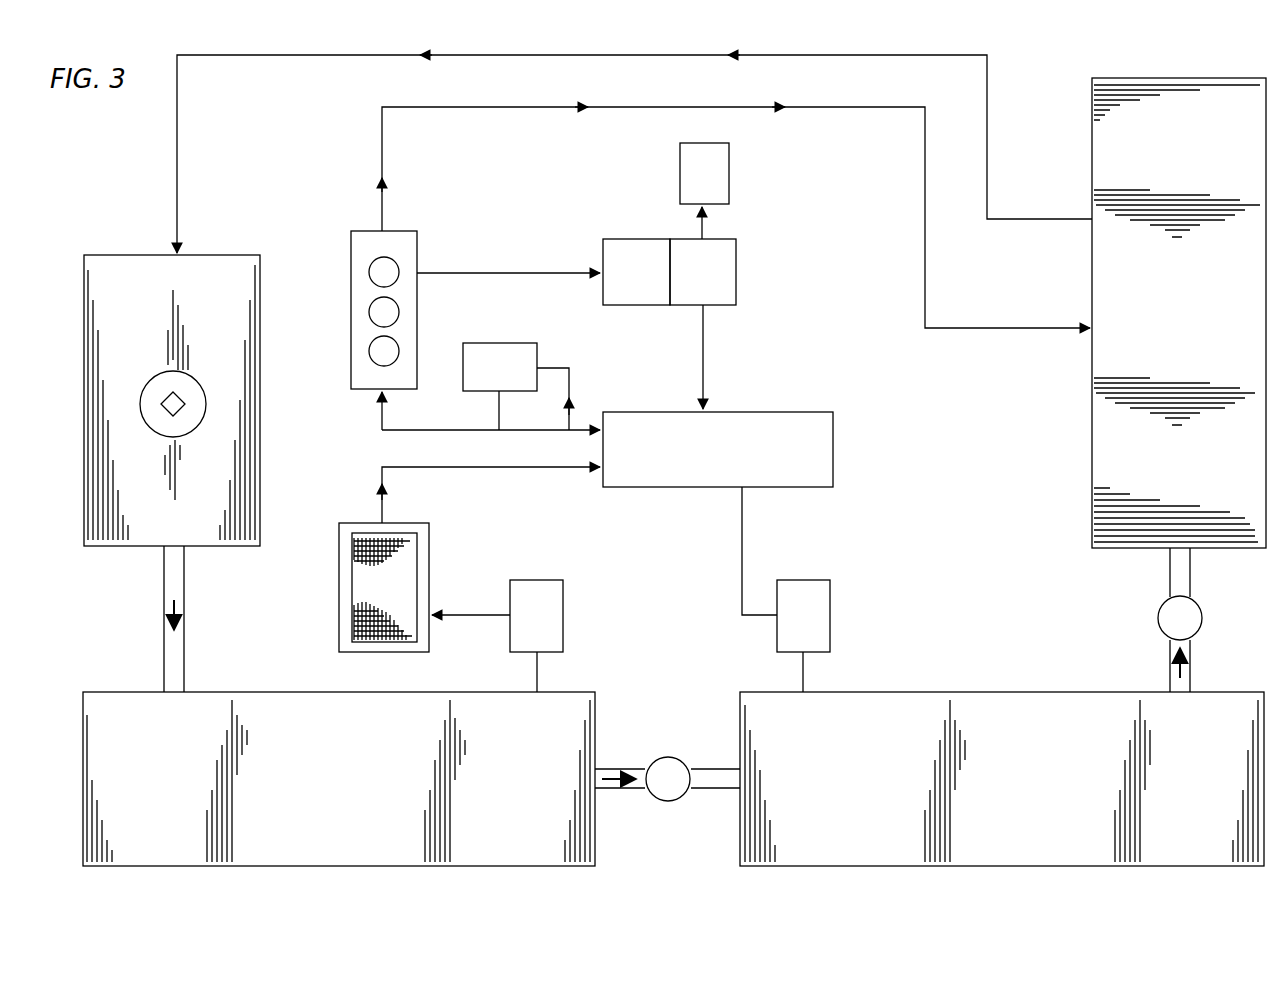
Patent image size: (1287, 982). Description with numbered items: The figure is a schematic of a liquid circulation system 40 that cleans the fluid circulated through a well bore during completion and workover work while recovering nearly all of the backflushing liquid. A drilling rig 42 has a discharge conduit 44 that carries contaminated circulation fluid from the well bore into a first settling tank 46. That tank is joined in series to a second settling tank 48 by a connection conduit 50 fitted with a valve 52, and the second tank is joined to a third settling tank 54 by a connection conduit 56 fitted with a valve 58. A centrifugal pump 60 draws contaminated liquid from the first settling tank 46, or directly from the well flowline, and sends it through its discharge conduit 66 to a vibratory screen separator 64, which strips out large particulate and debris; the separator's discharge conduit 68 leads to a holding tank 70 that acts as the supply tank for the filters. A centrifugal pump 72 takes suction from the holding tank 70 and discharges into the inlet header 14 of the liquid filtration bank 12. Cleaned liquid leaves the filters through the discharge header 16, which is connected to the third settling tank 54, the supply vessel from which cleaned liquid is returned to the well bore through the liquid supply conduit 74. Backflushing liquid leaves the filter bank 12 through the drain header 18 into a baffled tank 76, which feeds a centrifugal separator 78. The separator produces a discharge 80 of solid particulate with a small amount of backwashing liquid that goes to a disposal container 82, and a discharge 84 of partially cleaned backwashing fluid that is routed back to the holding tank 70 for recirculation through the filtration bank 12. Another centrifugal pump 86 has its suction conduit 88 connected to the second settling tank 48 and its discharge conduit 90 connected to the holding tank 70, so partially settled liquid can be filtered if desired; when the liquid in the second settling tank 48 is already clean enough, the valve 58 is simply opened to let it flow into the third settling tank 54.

The liquid filtration bank 12 is at (340, 262).
The inlet header 14 is at (382, 428).
The discharge header 16 is at (384, 216).
The drain header 18 is at (458, 272).
The liquid circulation system 40 is at (300, 40).
The drilling rig 42 is at (120, 270).
The discharge conduit 44 is at (165, 580).
The first settling tank 46 is at (348, 797).
The second settling tank 48 is at (1061, 797).
The connection conduit 50 is at (712, 792).
The valve 52 is at (675, 760).
The third settling tank 54 is at (1185, 317).
The connection conduit 56 is at (1192, 672).
The valve 58 is at (1160, 627).
The centrifugal pump 60 is at (553, 628).
The vibratory screen separator 64 is at (340, 600).
The discharge conduit 66 is at (465, 608).
The discharge conduit 68 is at (380, 482).
The holding tank 70 is at (835, 447).
The centrifugal pump 72 is at (505, 348).
The liquid supply conduit 74 is at (688, 55).
The baffled tank 76 is at (634, 243).
The centrifugal separator 78 is at (738, 274).
The discharge 80 is at (705, 229).
The disposal container 82 is at (720, 185).
The discharge 84 is at (705, 378).
The centrifugal pump 86 is at (830, 625).
The suction conduit 88 is at (803, 680).
The discharge conduit 90 is at (743, 548).